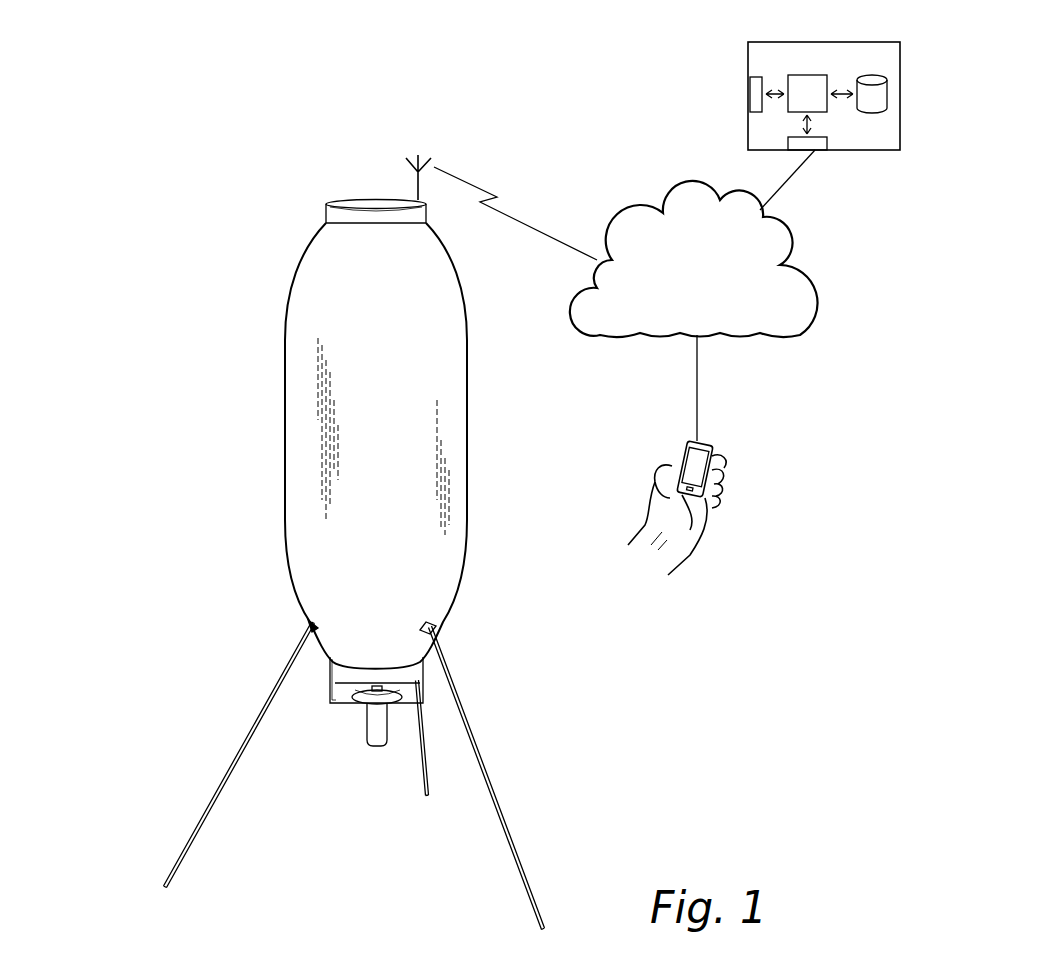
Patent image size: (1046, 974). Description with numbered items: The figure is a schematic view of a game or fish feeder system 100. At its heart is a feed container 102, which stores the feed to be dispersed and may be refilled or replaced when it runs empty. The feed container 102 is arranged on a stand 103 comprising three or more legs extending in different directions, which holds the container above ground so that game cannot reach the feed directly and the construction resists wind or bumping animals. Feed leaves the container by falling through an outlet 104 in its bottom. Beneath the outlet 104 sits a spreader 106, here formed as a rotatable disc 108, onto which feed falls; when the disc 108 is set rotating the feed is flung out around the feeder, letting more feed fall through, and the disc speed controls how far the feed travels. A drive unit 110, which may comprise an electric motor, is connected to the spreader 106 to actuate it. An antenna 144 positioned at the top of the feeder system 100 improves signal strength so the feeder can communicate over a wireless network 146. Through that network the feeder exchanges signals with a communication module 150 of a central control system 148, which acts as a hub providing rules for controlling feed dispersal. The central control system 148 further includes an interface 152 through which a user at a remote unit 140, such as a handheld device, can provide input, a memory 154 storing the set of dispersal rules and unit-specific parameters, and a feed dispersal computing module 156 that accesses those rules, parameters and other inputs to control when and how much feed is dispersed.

The feeder system 100 is at (208, 163).
The feed container 102 is at (322, 264).
The stand 103 is at (268, 692).
The outlet 104 is at (350, 705).
The spreader 106 is at (399, 709).
The rotatable disc 108 is at (398, 696).
The drive unit 110 is at (377, 747).
The remote unit 140 is at (712, 444).
The antenna 144 is at (418, 178).
The wireless network 146 is at (700, 193).
The central control system 148 is at (788, 113).
The communication module 150 is at (748, 95).
The interface 152 is at (820, 148).
The memory 154 is at (868, 78).
The feed dispersal computing module 156 is at (802, 75).